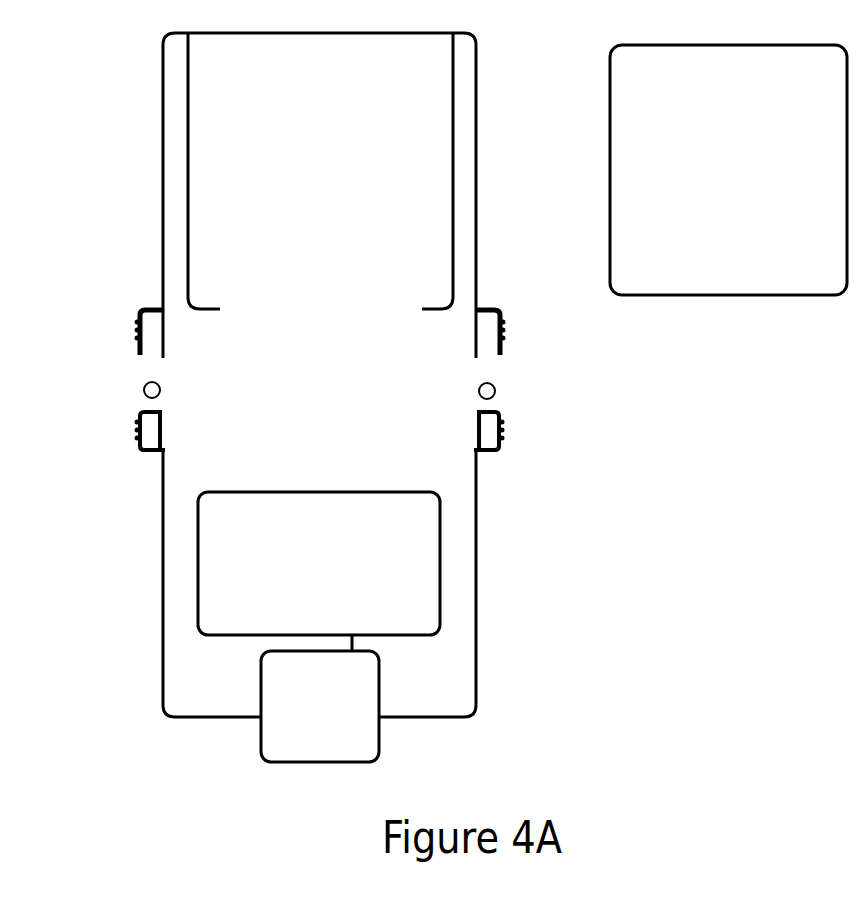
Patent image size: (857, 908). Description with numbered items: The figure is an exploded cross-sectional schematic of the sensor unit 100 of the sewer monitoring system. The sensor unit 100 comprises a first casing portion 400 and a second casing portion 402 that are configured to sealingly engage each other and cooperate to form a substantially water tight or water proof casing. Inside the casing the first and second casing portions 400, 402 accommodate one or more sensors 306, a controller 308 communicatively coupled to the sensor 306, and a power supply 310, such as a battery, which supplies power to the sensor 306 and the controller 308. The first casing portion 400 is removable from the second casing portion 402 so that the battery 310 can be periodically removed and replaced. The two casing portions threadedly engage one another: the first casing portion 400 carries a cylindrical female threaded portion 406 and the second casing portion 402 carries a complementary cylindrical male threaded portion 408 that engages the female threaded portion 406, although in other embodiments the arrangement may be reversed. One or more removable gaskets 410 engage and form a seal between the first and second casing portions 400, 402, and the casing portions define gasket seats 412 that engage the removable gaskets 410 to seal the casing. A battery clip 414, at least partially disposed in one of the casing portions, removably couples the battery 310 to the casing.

The sensor unit 100 is at (715, 644).
The sensor 306 is at (273, 728).
The controller 308 is at (425, 575).
The power supply 310 is at (630, 120).
The first casing portion 400 is at (163, 205).
The second casing portion 402 is at (163, 560).
The female threaded portion 406 is at (143, 346).
The male threaded portion 408 is at (140, 438).
The removable gasket 410 is at (145, 397).
The gasket seat 412 is at (492, 313).
The battery clip 414 is at (453, 285).